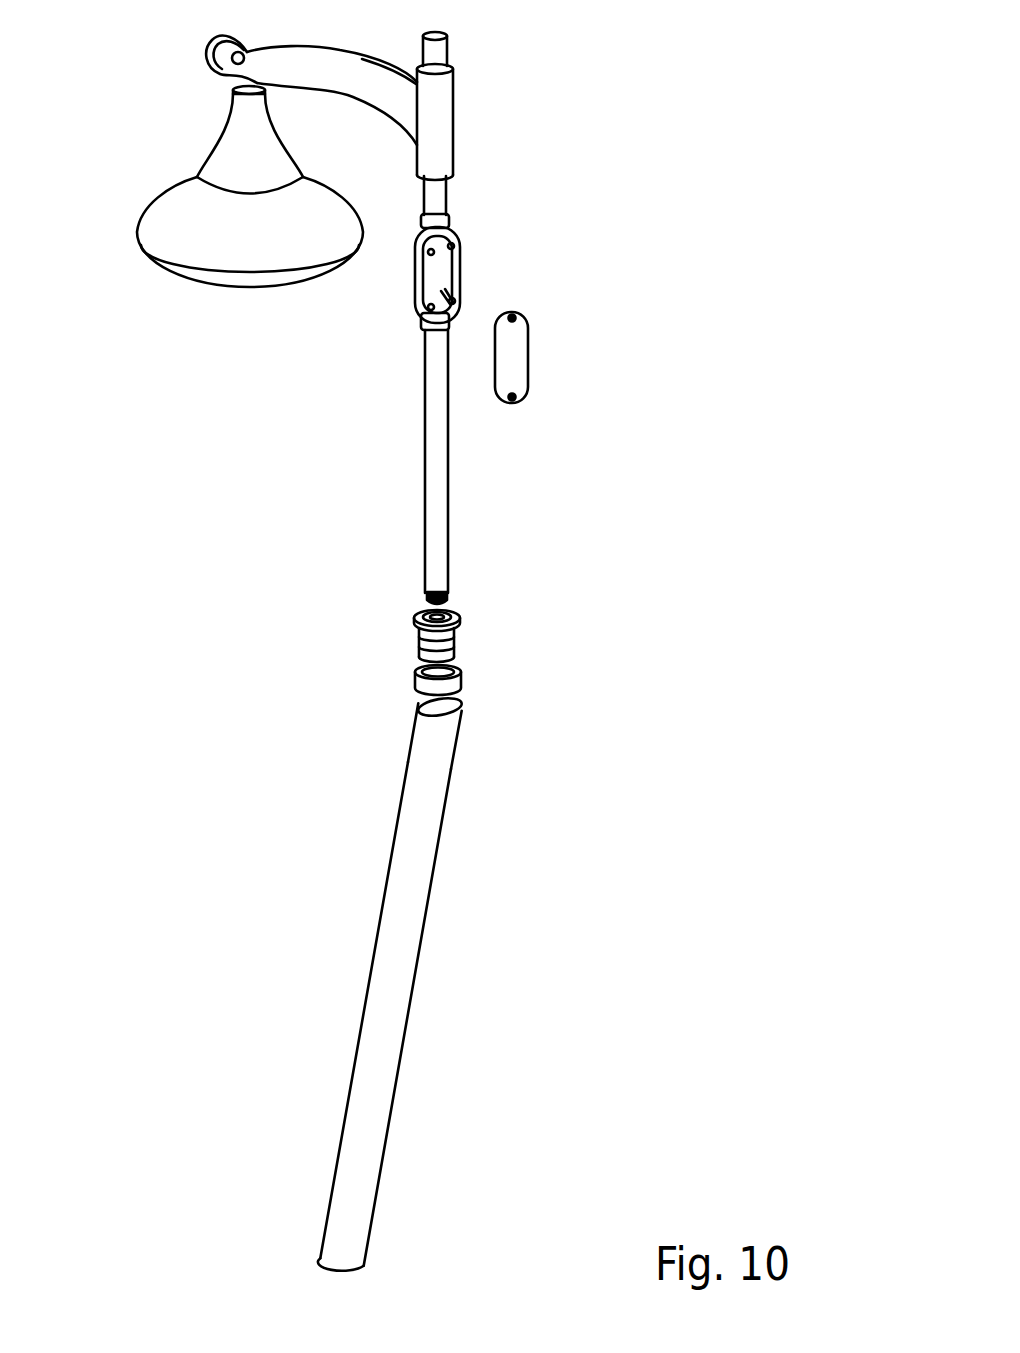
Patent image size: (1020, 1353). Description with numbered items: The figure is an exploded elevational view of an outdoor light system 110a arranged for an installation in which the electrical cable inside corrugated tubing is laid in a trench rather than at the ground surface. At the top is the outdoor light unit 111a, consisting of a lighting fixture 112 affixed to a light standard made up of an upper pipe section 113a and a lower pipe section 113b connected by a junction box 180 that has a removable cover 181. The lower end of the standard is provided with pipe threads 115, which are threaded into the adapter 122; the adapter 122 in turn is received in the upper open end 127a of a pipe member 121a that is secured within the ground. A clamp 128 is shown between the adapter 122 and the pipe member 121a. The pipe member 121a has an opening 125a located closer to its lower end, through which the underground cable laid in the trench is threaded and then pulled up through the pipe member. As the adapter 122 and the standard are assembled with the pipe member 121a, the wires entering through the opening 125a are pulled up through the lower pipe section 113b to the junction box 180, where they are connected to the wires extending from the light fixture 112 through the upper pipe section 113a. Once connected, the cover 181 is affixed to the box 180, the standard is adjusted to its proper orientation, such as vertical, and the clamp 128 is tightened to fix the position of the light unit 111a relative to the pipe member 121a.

The lighting fixture 112 is at (153, 197).
The upper pipe section 113a is at (447, 195).
The junction box 180 is at (460, 277).
The removable cover 181 is at (530, 363).
The outdoor light unit 111a is at (500, 467).
The lower pipe section 113b is at (448, 542).
The pipe threads 115 is at (447, 603).
The adapter 122 is at (463, 623).
The outdoor light system 110a is at (530, 648).
The clamp 128 is at (465, 683).
The upper open end 127a is at (459, 722).
The pipe member 121a is at (437, 854).
The opening 125a is at (386, 1128).